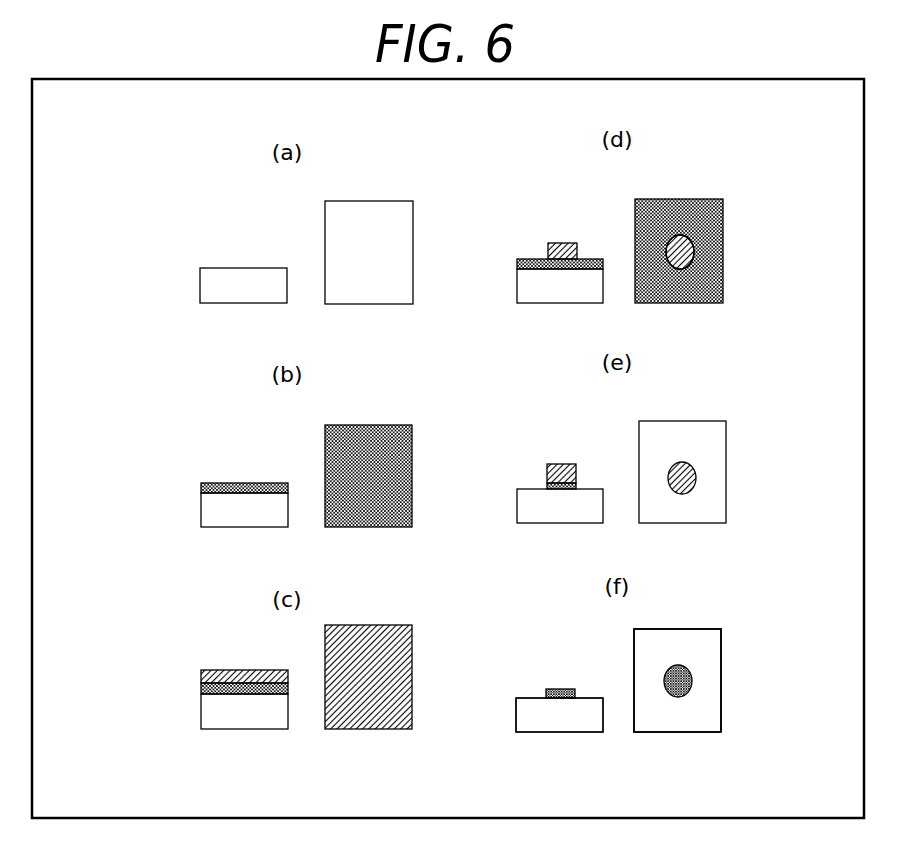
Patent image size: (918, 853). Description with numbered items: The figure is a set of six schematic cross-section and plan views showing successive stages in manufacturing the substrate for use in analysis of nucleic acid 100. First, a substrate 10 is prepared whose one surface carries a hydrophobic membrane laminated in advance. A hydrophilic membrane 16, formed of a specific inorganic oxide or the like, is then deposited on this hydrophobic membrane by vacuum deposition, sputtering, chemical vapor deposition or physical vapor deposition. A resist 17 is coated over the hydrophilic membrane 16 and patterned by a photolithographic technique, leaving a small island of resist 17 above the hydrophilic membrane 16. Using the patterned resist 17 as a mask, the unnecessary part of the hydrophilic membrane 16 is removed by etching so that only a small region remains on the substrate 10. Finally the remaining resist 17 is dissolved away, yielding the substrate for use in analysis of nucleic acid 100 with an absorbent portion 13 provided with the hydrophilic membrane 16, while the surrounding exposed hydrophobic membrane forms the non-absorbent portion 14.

The substrate 10 is at (232, 283).
The hydrophilic membrane 16 is at (217, 488).
The resist 17 is at (210, 676).
The absorbent portion 13 is at (565, 688).
The non-absorbent portion 14 is at (538, 697).
The substrate for use in analysis of nucleic acid 100 is at (688, 620).